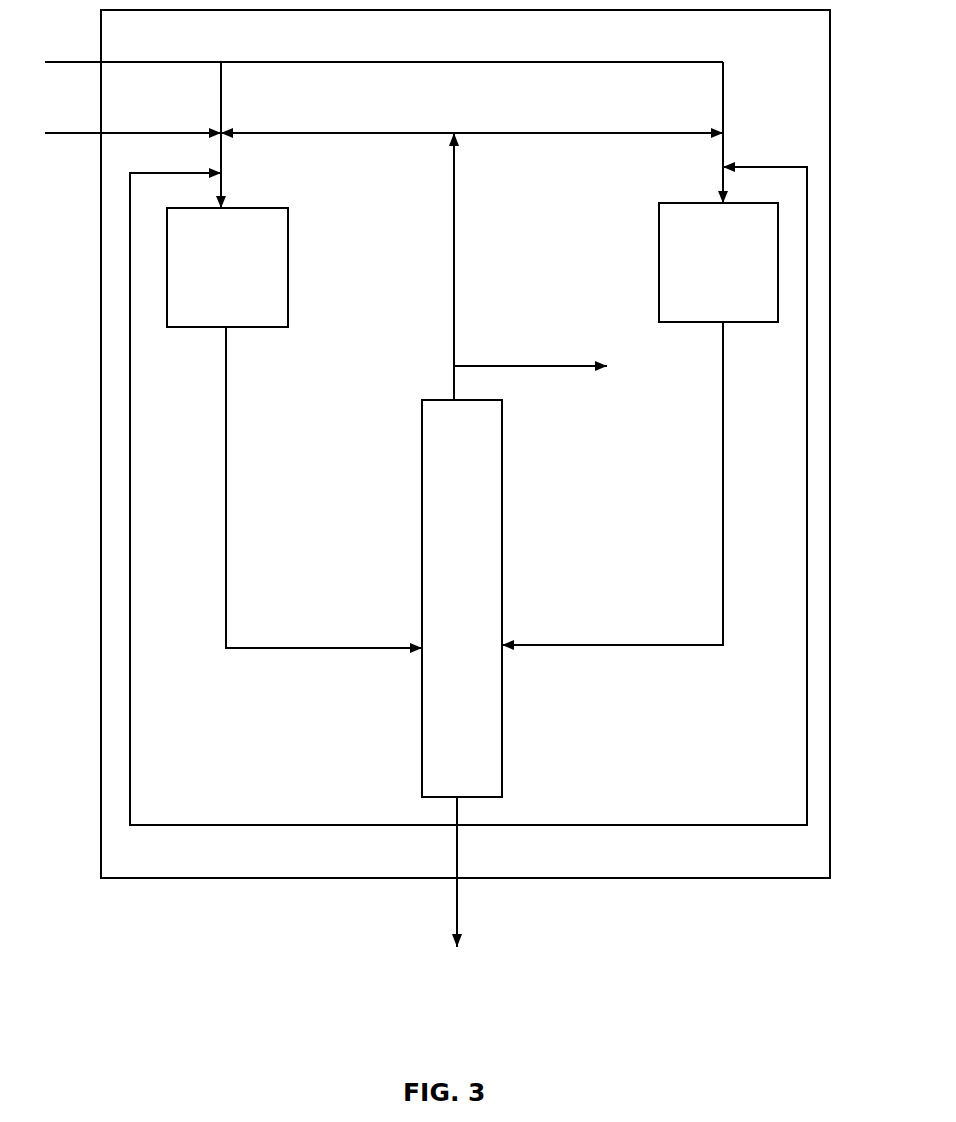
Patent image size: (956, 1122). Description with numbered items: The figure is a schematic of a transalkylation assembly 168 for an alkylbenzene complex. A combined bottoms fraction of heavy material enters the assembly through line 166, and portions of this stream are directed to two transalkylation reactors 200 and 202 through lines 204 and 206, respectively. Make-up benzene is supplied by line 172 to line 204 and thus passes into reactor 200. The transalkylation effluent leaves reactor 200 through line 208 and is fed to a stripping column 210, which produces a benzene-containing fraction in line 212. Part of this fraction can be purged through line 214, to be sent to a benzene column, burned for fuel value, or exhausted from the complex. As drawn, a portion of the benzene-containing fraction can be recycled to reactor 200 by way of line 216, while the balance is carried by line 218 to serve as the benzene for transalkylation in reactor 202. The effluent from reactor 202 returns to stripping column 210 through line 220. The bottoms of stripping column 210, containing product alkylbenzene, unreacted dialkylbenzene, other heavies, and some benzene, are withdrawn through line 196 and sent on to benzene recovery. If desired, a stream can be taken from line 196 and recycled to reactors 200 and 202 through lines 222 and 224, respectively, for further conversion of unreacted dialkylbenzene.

The line 166 is at (85, 61).
The transalkylation assembly 168 is at (182, 855).
The line 172 is at (88, 133).
The line 196 is at (455, 893).
The transalkylation reactor 200 is at (270, 277).
The transalkylation reactor 202 is at (678, 260).
The line 204 is at (222, 72).
The line 206 is at (722, 78).
The line 208 is at (228, 458).
The stripping column 210 is at (455, 563).
The line 212 is at (452, 305).
The line 214 is at (483, 365).
The left manifold line 216 is at (370, 135).
The line 218 is at (596, 134).
The line 220 is at (723, 515).
The line 222 is at (130, 786).
The line 224 is at (806, 782).